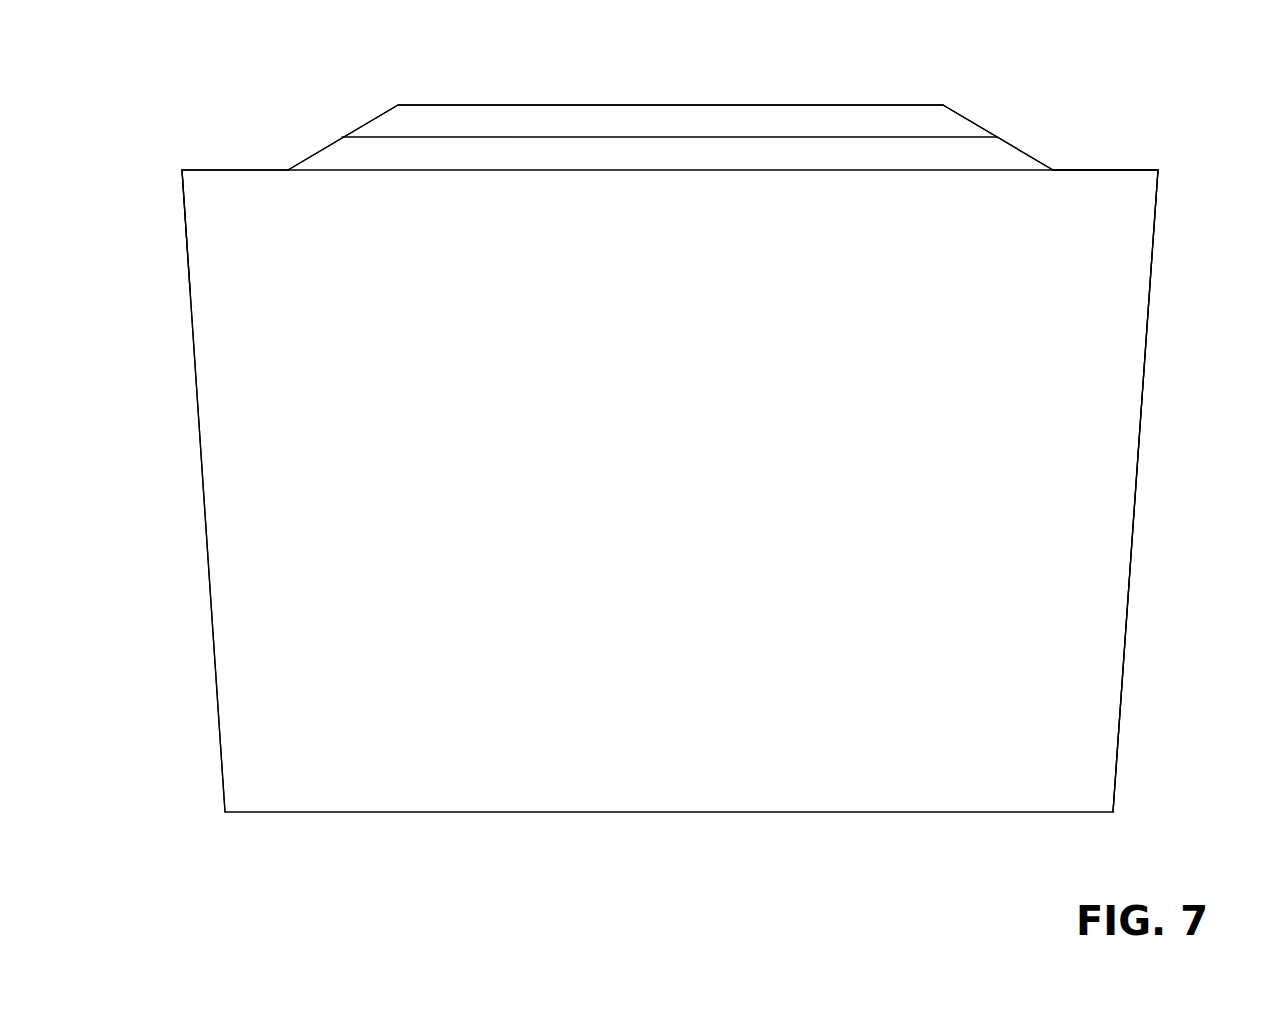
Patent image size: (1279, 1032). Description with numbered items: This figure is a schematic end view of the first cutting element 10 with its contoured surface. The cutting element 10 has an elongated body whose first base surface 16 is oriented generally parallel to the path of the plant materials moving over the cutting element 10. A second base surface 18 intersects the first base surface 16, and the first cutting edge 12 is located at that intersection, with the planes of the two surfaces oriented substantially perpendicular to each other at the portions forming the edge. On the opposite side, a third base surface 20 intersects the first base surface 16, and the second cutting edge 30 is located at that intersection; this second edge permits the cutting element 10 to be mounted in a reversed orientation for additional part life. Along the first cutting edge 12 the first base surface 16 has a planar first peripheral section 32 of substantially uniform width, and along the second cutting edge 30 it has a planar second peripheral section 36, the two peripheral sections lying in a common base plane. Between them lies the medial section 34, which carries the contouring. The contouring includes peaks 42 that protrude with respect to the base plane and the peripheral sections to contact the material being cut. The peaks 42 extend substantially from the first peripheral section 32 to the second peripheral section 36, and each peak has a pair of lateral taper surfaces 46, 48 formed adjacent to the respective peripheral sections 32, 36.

The first cutting element 10 is at (1027, 75).
The first cutting edge 12 is at (1158, 170).
The first base surface 16 is at (1105, 170).
The second base surface 18 is at (1123, 682).
The third base surface 20 is at (208, 573).
The second cutting edge 30 is at (182, 170).
The first peripheral section 32 is at (1075, 170).
The medial section 34 is at (802, 105).
The second peripheral section 36 is at (237, 170).
The peaks 42 is at (686, 105).
The lateral taper surface 46 is at (977, 125).
The lateral taper surface 48 is at (363, 123).